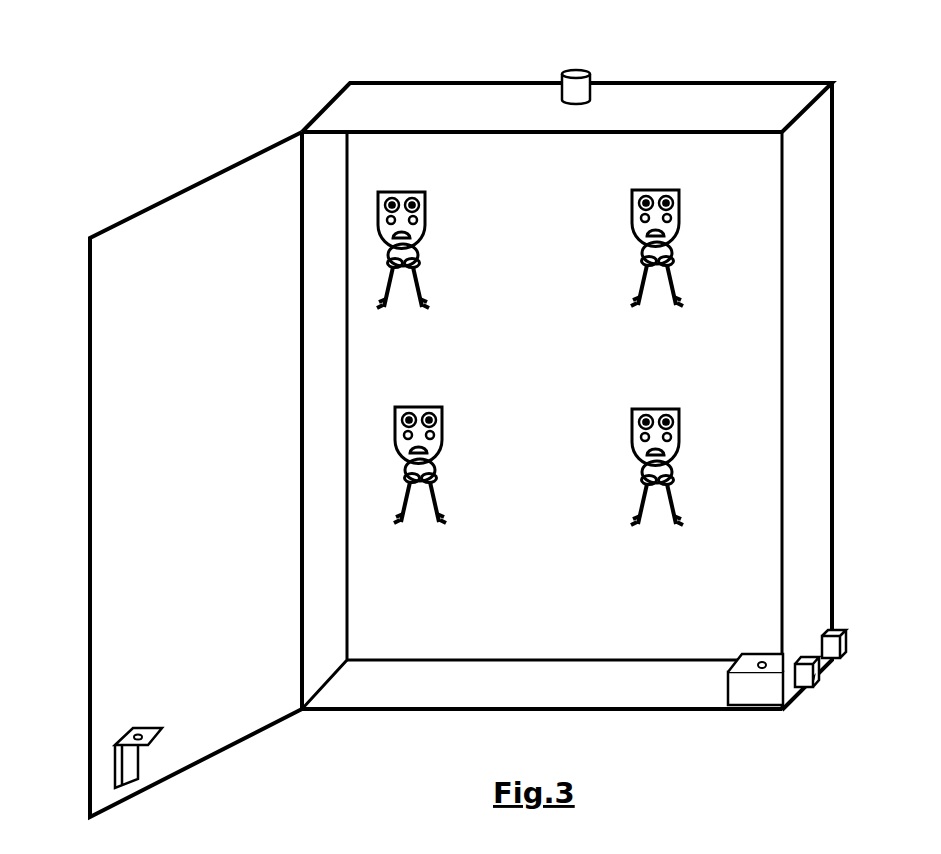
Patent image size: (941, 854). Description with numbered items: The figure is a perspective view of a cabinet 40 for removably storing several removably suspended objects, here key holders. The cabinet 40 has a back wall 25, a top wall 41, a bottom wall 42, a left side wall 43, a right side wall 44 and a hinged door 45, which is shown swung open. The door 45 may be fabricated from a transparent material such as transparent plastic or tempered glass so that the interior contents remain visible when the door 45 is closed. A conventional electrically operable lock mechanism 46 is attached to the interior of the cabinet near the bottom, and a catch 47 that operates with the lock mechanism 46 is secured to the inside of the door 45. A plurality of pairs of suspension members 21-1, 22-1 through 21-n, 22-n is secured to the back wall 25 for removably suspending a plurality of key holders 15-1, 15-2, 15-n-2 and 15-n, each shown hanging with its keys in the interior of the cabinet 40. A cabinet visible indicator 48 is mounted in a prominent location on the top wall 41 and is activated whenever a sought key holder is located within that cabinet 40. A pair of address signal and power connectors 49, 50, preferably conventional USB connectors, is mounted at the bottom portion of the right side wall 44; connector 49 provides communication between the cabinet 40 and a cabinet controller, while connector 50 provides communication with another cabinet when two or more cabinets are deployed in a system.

The cabinet 40 is at (539, 403).
The top wall 41 is at (710, 105).
The bottom wall 42 is at (578, 688).
The left side wall 43 is at (322, 218).
The right side wall 44 is at (802, 343).
The hinged door 45 is at (118, 402).
The electrically operable lock mechanism 46 is at (748, 693).
The catch 47 is at (129, 773).
The cabinet visible indicator 48 is at (575, 92).
The address signal and power connector 49 is at (808, 683).
The address signal and power connector 50 is at (833, 648).
The back wall 25 is at (542, 156).
The key holder 15-1 is at (428, 205).
The key holder 15-2 is at (680, 207).
The key holder 15-n-2 is at (449, 435).
The key holder 15-n is at (681, 446).
The suspension member 21-1 is at (392, 200).
The suspension member 22-1 is at (412, 200).
The suspension member 21-n is at (647, 416).
The suspension member 22-n is at (672, 424).